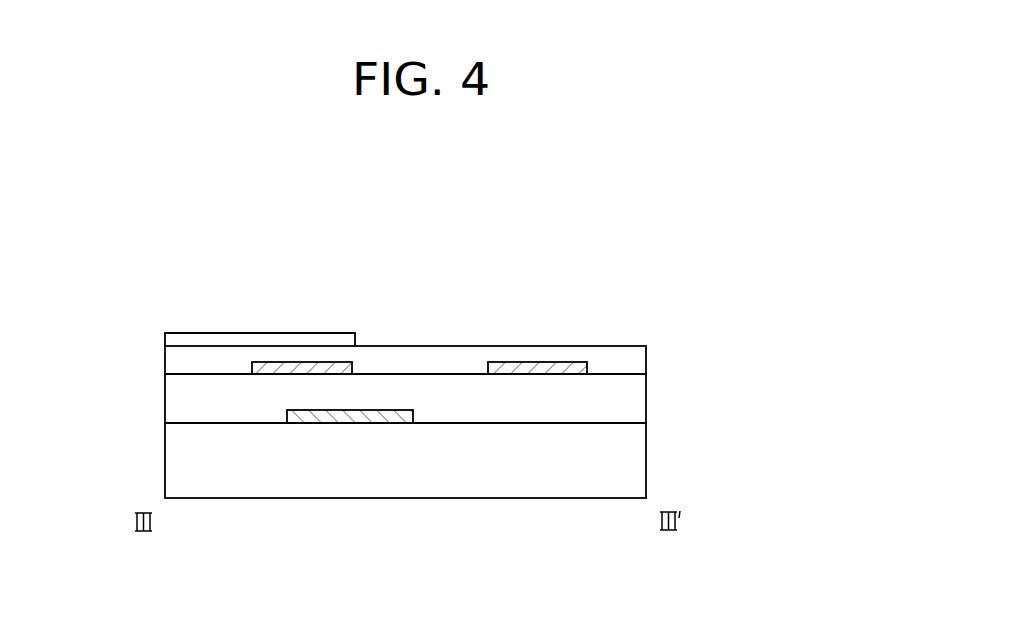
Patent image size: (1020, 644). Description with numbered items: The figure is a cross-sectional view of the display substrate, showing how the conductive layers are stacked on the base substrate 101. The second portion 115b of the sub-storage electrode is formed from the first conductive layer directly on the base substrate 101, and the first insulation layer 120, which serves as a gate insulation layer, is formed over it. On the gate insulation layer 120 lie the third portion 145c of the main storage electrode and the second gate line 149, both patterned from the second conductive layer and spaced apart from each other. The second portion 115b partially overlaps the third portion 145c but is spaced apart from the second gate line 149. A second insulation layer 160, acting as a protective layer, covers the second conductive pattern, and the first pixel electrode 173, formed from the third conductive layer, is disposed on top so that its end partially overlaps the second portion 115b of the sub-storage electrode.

The base substrate 101 is at (641, 472).
The first insulation layer 120 is at (641, 400).
The second insulation layer 160 is at (641, 363).
The first pixel electrode 173 is at (165, 342).
The third portion of the main storage electrode 145c is at (260, 375).
The second gate line 149 is at (540, 375).
The second portion of the sub-storage electrode 115b is at (333, 422).